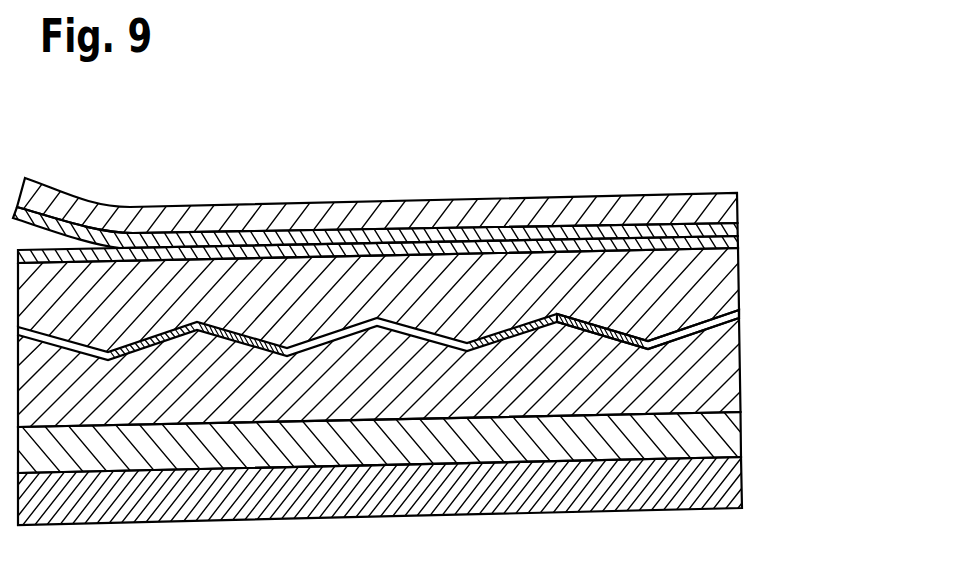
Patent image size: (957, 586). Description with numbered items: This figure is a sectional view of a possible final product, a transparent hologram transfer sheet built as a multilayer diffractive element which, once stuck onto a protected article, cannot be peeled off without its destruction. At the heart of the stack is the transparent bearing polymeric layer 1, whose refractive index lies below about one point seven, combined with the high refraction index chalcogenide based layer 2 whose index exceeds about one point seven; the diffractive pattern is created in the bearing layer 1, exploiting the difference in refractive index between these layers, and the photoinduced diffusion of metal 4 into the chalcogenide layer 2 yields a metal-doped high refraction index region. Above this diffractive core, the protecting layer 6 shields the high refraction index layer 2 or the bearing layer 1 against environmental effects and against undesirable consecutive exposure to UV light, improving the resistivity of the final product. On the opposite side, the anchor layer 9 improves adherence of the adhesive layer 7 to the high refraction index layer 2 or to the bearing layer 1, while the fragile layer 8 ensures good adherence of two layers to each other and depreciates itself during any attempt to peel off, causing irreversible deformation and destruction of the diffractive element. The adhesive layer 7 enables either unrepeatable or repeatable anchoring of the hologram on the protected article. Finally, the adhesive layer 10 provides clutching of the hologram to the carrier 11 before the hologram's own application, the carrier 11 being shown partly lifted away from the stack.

The transparent bearing polymeric layer 1 is at (718, 285).
The high refraction index chalcogenide based layer 2 is at (729, 317).
The metal 4 is at (646, 344).
The protecting layer 6 is at (721, 240).
The adhesive layer 7 is at (708, 485).
The fragile layer 8 is at (722, 440).
The anchor layer 9 is at (707, 397).
The adhesive layer 10 is at (718, 228).
The carrier 11 is at (720, 205).